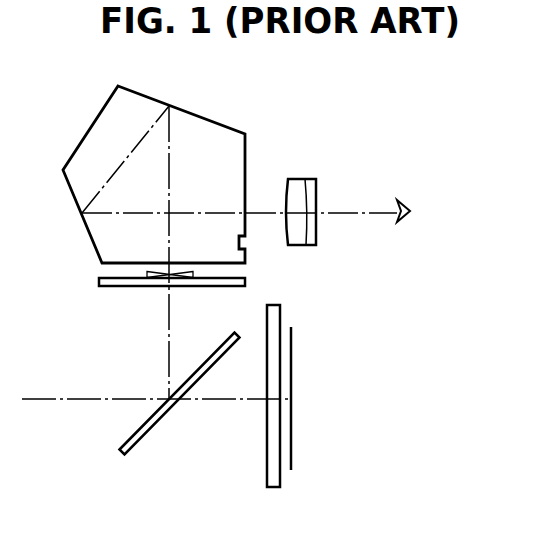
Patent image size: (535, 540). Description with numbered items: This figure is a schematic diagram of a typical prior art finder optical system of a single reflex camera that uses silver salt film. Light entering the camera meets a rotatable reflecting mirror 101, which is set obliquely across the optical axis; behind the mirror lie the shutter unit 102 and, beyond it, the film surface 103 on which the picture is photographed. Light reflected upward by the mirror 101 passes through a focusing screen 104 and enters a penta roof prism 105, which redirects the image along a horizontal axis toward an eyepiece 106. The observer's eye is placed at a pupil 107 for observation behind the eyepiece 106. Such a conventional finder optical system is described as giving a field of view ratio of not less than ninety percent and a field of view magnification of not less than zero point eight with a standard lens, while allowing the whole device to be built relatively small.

The rotatable reflecting mirror 101 is at (137, 448).
The shutter unit 102 is at (268, 450).
The film surface 103 is at (292, 453).
The focusing screen 104 is at (117, 288).
The penta roof prism 105 is at (208, 122).
The eyepiece 106 is at (297, 186).
The pupil 107 is at (411, 224).